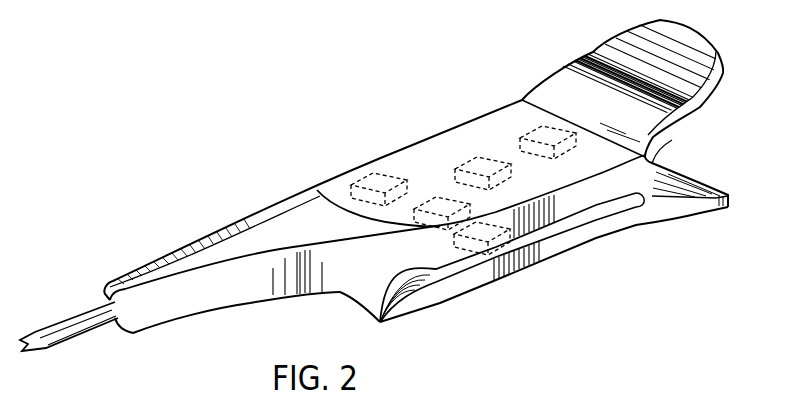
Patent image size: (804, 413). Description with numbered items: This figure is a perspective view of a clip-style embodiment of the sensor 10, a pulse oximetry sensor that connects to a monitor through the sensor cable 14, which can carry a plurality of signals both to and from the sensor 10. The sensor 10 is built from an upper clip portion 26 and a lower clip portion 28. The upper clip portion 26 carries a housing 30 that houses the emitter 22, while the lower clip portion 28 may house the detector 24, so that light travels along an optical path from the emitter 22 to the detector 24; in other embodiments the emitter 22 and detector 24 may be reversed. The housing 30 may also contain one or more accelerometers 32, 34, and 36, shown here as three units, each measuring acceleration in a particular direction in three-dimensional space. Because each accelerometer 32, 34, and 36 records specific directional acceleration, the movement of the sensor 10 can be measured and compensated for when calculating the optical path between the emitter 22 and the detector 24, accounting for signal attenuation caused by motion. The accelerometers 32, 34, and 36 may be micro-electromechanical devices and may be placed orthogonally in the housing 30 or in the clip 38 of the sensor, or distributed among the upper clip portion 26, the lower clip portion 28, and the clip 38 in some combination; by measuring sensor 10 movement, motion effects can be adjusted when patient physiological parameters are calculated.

The sensor 10 is at (362, 80).
The sensor cable 14 is at (78, 307).
The emitter 22 is at (466, 155).
The detector 24 is at (542, 272).
The upper clip portion 26 is at (237, 223).
The lower clip portion 28 is at (493, 270).
The housing 30 is at (483, 132).
The accelerometer 32 is at (532, 110).
The accelerometer 34 is at (418, 232).
The accelerometer 36 is at (366, 172).
The clip 38 is at (713, 100).